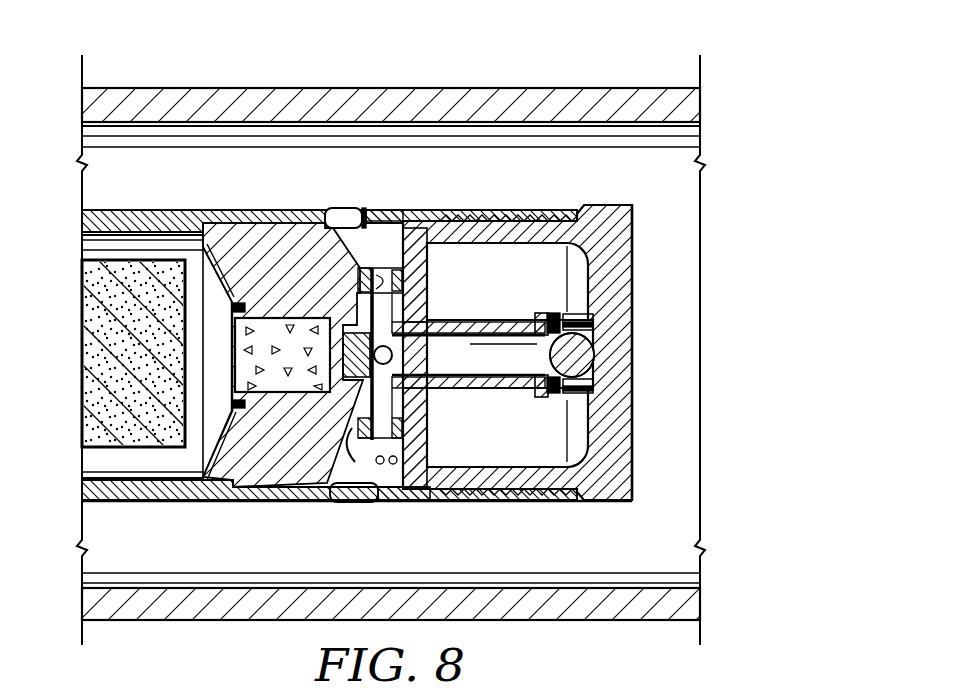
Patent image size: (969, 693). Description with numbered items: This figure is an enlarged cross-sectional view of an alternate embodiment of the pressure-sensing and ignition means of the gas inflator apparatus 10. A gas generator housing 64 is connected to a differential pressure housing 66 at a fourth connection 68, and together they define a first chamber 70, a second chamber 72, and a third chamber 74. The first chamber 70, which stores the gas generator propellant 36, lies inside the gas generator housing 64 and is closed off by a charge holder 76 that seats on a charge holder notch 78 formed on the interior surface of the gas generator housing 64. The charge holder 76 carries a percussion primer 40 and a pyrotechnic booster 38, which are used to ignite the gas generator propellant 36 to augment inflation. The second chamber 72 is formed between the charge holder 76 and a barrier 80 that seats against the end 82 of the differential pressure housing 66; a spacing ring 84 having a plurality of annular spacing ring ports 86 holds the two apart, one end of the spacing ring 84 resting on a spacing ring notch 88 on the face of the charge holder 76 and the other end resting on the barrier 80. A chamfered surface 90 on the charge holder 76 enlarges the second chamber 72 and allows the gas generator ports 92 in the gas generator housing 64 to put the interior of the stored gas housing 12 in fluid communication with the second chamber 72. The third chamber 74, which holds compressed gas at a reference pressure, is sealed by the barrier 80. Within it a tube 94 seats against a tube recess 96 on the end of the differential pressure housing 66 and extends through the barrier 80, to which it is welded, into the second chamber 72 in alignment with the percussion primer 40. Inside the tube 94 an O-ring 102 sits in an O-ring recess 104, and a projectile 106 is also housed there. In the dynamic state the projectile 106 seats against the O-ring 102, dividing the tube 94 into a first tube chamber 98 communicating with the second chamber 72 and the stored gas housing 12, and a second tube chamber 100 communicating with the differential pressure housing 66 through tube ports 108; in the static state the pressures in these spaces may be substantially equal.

The gas inflator apparatus 10 is at (740, 48).
The stored gas housing 12 is at (295, 88).
The gas generator propellant 36 is at (135, 364).
The pyrotechnic booster 38 is at (300, 394).
The percussion primer 40 is at (355, 325).
The gas generator housing 64 is at (140, 208).
The differential pressure housing 66 is at (632, 250).
The fourth connection 68 is at (522, 212).
The first chamber 70 is at (92, 460).
The second chamber 72 is at (388, 260).
The third chamber 74 is at (483, 282).
The charge holder 76 is at (258, 240).
The charge holder notch 78 is at (225, 503).
The barrier 80 is at (410, 480).
The end 82 is at (440, 490).
The spacing ring 84 is at (422, 445).
The spacing ring ports 86 is at (405, 297).
The spacing ring notch 88 is at (352, 446).
The chamfered surface 90 is at (357, 485).
The gas generator ports 92 is at (364, 212).
The tube 94 is at (505, 392).
The tube recess 96 is at (594, 312).
The first tube chamber 98 is at (457, 367).
The second tube chamber 100 is at (592, 385).
The O-ring 102 is at (545, 322).
The O-ring recess 104 is at (558, 313).
The projectile 106 is at (596, 356).
The tube ports 108 is at (592, 404).